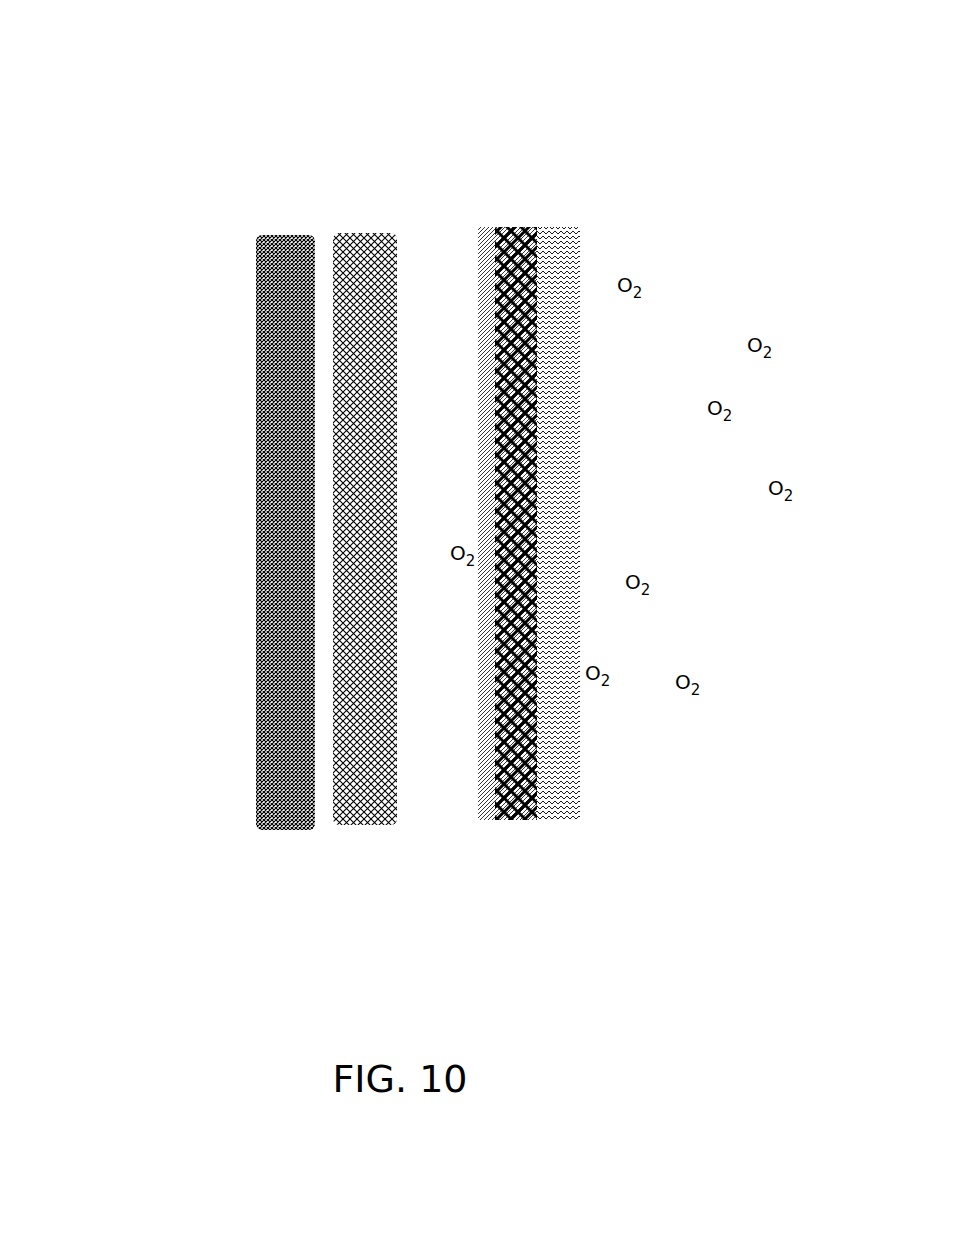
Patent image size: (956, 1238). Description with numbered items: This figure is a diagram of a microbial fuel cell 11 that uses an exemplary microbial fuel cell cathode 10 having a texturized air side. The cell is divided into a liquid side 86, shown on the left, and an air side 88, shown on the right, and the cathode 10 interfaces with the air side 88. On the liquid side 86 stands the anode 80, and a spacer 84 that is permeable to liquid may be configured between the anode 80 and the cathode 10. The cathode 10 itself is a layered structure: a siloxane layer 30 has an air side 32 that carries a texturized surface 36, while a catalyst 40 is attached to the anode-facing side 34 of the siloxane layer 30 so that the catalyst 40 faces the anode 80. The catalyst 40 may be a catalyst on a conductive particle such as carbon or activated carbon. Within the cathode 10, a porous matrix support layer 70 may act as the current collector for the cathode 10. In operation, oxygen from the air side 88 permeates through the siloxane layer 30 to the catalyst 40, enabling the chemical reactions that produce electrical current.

The microbial fuel cell cathode 10 is at (570, 224).
The microbial fuel cell 11 is at (370, 102).
The siloxane layer 30 is at (578, 265).
The air side 32 is at (568, 392).
The anode-facing side 34 is at (520, 820).
The textured surface 36 is at (570, 465).
The catalyst 40 is at (480, 228).
The porous matrix support layer 70 is at (510, 228).
The anode 80 is at (255, 340).
The spacer 84 is at (348, 237).
The liquid side 86 is at (76, 566).
The air side 88 is at (673, 545).